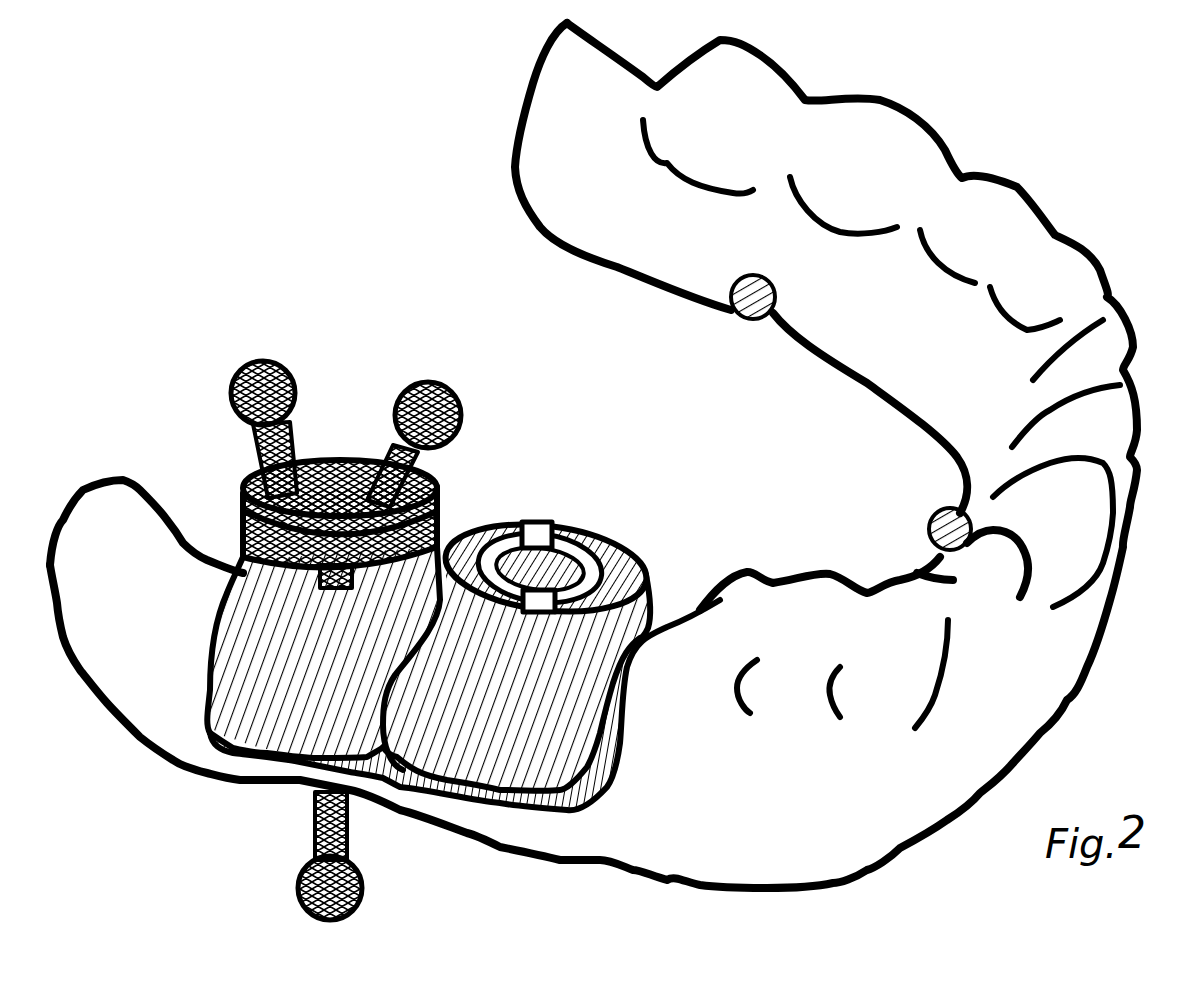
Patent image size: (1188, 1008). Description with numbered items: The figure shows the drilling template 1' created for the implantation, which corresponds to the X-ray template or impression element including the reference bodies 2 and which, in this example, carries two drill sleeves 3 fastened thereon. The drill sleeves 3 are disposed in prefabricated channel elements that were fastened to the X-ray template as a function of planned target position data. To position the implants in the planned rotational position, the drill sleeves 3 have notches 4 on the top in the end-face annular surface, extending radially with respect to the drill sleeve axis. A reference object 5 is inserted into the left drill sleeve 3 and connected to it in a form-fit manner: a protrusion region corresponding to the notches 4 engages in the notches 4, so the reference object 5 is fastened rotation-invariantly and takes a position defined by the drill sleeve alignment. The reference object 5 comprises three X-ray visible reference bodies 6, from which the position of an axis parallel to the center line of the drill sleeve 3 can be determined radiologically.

The drilling template 1' is at (593, 444).
The reference bodies 2 is at (930, 515).
The drill sleeves 3 is at (226, 548).
The notches 4 is at (500, 613).
The reference object 5 is at (341, 436).
The X-ray visible reference bodies 6 is at (262, 360).